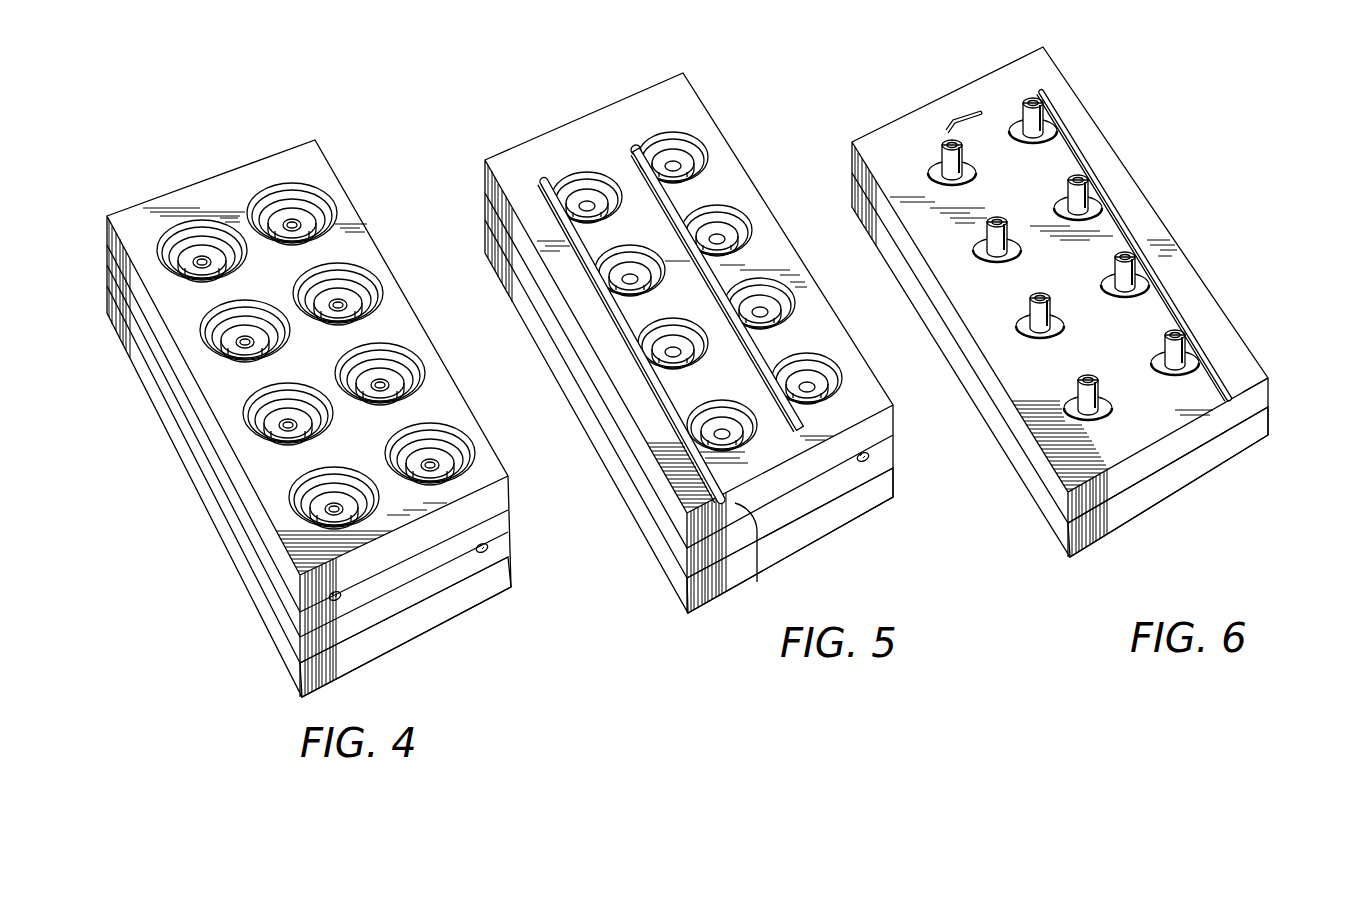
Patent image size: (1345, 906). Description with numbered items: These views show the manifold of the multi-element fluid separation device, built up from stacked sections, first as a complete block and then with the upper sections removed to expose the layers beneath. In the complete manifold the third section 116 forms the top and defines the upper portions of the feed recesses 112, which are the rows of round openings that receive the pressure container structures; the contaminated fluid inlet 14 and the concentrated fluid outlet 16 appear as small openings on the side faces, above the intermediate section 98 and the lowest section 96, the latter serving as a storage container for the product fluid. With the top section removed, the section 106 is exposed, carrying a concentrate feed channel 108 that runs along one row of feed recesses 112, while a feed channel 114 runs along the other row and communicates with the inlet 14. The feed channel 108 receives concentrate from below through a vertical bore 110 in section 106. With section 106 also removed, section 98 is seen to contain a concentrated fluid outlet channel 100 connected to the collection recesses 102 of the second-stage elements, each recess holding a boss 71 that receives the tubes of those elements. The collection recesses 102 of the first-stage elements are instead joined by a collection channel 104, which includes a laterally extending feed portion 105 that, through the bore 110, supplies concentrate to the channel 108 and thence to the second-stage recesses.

In FIG. 4, the third section 116 is at (310, 156).
In FIG. 4, the concentrated fluid outlet 16 is at (485, 545).
In FIG. 5, the concentrated fluid outlet 16 is at (866, 454).
In FIG. 6, the concentrated fluid outlet 16 is at (1247, 383).
In FIG. 4, the contaminated fluid inlet 14 is at (334, 591).
In FIG. 5, the contaminated fluid inlet 14 is at (758, 552).
In FIG. 4, the section 98 is at (500, 556).
In FIG. 5, the section 98 is at (878, 465).
In FIG. 6, the section 98 is at (1257, 400).
In FIG. 4, the lowest section 96 is at (495, 583).
In FIG. 5, the lowest section 96 is at (878, 490).
In FIG. 6, the lowest section 96 is at (1257, 432).
In FIG. 5, the section 106 is at (876, 425).
In FIG. 5, the feed recess 112 is at (733, 214).
In FIG. 5, the feed channel 114 is at (622, 318).
In FIG. 5, the vertical bore 110 is at (635, 145).
In FIG. 5, the concentrate feed channel 108 is at (675, 193).
In FIG. 6, the concentrated fluid outlet channel 100 is at (1168, 298).
In FIG. 6, the laterally extending feed portion 105 is at (967, 112).
In FIG. 6, the collection recess 102 is at (1038, 147).
In FIG. 6, the collection channel 104 is at (994, 298).
In FIG. 6, the boss 71 is at (1160, 350).